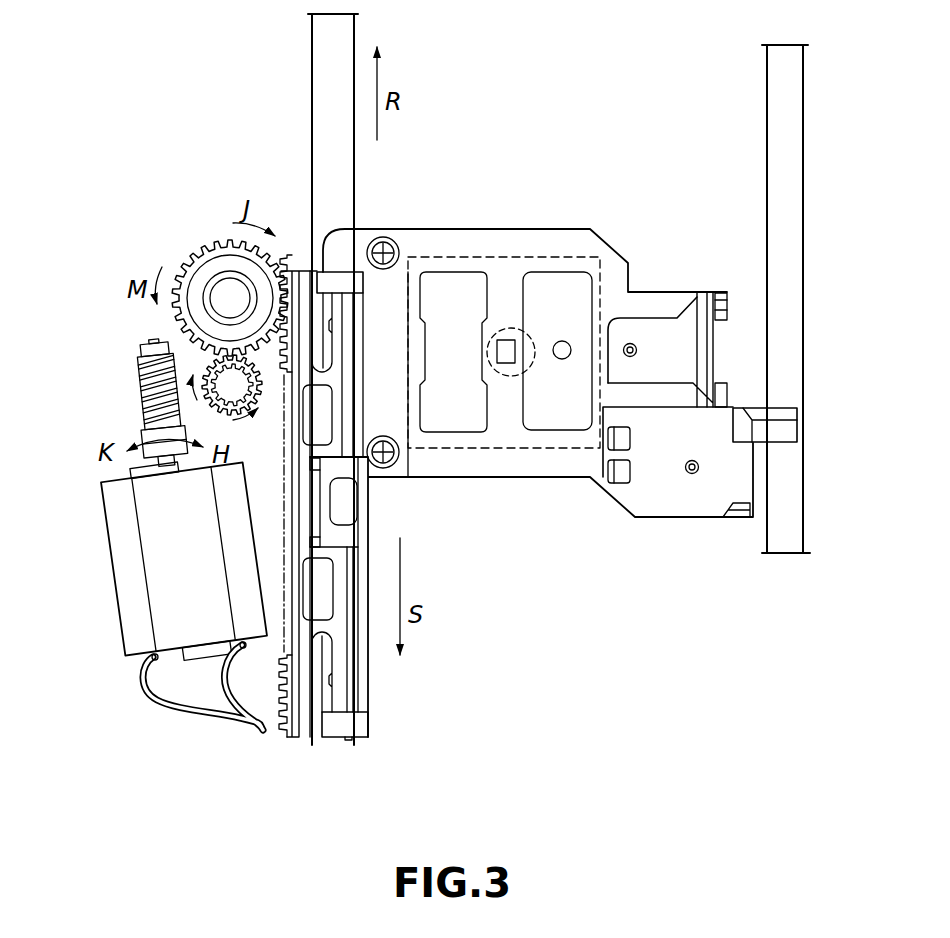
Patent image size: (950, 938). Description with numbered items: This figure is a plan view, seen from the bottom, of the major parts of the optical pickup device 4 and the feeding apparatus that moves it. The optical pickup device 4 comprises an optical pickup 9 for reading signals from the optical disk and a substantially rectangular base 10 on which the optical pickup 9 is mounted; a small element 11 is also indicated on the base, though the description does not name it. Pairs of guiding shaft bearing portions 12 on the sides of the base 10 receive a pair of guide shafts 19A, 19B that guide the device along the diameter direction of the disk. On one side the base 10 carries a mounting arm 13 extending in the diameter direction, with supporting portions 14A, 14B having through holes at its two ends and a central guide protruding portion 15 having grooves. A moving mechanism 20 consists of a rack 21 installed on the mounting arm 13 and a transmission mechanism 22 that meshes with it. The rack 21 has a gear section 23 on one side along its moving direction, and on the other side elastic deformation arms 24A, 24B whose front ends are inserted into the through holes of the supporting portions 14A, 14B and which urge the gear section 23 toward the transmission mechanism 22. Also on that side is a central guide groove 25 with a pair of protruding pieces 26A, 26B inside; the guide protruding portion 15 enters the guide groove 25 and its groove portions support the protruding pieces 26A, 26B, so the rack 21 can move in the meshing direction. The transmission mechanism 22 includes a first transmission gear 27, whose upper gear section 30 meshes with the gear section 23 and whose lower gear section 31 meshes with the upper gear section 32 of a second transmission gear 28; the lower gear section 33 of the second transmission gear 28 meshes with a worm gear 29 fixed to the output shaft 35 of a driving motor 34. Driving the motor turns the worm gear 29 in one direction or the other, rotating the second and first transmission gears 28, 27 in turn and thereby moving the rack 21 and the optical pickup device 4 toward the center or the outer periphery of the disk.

The optical pickup device 4 is at (517, 226).
The optical pickup 9 is at (575, 250).
The base 10 is at (612, 262).
The sensor 11 is at (507, 330).
The guiding shaft bearing portions 12 is at (788, 428).
The mounting arm 13 is at (321, 502).
The supporting portion 14A is at (357, 272).
The supporting portion 14B is at (355, 736).
The guide protruding portion 15 is at (372, 483).
The guide shaft 19A is at (312, 85).
The guide shaft 19B is at (803, 101).
The moving mechanism 20 is at (204, 412).
The rack 21 is at (299, 257).
The transmission mechanism 22 is at (172, 501).
The gear section 23 is at (278, 675).
The elastic deformation arm 24A is at (340, 310).
The elastic deformation arm 24B is at (342, 680).
The guide groove 25 is at (322, 462).
The protruding piece 26A is at (360, 508).
The protruding piece 26B is at (312, 540).
The first transmission gear 27 is at (190, 283).
The second transmission gear 28 is at (106, 370).
The worm gear 29 is at (140, 393).
The upper gear section 30 is at (223, 247).
The lower gear section 31 is at (187, 256).
The upper gear section 32 is at (187, 356).
The lower gear section 33 is at (140, 350).
The driving motor 34 is at (127, 636).
The output shaft 35 is at (142, 428).